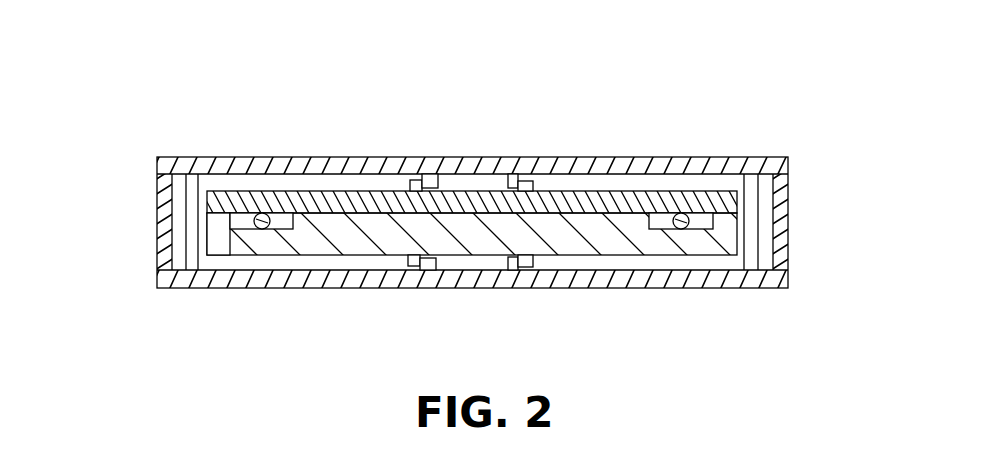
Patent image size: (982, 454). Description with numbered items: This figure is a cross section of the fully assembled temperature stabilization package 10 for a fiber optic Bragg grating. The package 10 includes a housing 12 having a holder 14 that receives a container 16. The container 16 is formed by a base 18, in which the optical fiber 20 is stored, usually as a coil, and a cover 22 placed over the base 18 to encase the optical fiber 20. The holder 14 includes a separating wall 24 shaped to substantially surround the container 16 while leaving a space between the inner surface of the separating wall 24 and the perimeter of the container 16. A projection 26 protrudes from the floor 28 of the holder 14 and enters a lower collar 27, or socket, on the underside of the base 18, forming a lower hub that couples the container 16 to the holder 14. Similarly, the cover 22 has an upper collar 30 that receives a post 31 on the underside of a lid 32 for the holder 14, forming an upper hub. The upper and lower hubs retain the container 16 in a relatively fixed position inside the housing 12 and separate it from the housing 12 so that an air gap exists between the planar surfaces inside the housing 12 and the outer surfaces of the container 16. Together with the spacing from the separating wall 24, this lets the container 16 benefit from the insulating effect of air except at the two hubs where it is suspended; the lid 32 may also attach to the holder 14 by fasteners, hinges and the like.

The temperature stabilization package 10 is at (764, 140).
The housing 12 is at (138, 198).
The holder 14 is at (162, 237).
The container 16 is at (348, 262).
The base 18 is at (226, 256).
The optical fiber 20 is at (682, 217).
The cover 22 is at (283, 197).
The separating wall 24 is at (191, 186).
The projection 26 is at (513, 262).
The lower collar 27 is at (417, 262).
The floor 28 is at (636, 266).
The upper collar 30 is at (527, 183).
The post 31 is at (430, 180).
The lid 32 is at (765, 166).